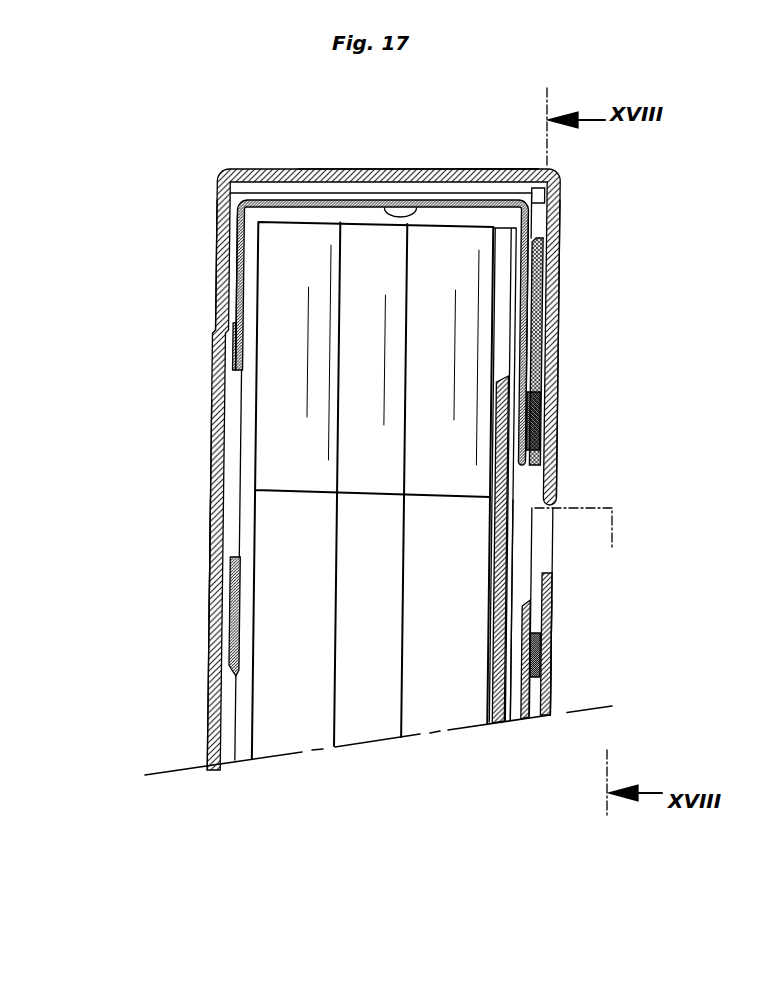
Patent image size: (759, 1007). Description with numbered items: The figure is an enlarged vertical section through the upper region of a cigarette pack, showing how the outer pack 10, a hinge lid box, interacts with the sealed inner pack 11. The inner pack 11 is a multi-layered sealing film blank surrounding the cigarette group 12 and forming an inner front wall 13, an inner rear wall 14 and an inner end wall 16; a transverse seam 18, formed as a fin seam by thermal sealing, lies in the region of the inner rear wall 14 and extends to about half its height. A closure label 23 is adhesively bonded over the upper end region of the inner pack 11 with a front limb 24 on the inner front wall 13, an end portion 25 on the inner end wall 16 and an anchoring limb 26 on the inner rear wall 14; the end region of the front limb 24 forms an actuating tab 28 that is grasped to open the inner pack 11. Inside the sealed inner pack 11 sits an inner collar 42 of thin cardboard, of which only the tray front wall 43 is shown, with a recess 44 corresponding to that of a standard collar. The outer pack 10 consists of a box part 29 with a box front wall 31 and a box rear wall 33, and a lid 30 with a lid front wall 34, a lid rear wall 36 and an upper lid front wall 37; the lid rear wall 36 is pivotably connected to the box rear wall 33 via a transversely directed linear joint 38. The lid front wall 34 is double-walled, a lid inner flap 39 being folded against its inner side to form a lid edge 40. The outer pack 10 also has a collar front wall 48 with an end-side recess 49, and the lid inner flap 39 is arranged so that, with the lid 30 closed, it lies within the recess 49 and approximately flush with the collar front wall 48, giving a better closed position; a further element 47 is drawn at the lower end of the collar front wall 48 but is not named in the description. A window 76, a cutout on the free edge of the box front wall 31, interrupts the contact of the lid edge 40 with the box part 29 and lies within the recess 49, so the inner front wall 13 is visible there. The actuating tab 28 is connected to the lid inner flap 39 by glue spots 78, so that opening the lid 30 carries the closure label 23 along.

The outer pack 10 is at (604, 194).
The inner pack 11 is at (365, 778).
The cigarette group 12 is at (437, 690).
The inner front wall 13 is at (512, 723).
The inner rear wall 14 is at (235, 748).
The inner end wall 16 is at (420, 213).
The transverse seam 18 is at (227, 617).
The closure label 23 is at (303, 200).
The front limb 24 is at (533, 280).
The end portion 25 is at (465, 205).
The anchoring limb 26 is at (238, 250).
The actuating tab 28 is at (522, 360).
The box part 29 is at (152, 557).
The lid 30 is at (529, 77).
The box front wall 31 is at (550, 685).
The box rear wall 33 is at (207, 655).
The lid front wall 34 is at (558, 252).
The lid rear wall 36 is at (217, 220).
The lid front wall 37 is at (265, 167).
The linear joint 38 is at (233, 322).
The lid inner flap 39 is at (558, 242).
The lid edge 40 is at (612, 512).
The inner collar 42 is at (500, 738).
The tray front wall 43 is at (553, 635).
The recess 44 is at (505, 375).
The fastening element 47 is at (551, 728).
The collar front wall 48 is at (533, 612).
The recess 49 is at (522, 608).
The window 76 is at (553, 540).
The glue spots 78 is at (537, 412).